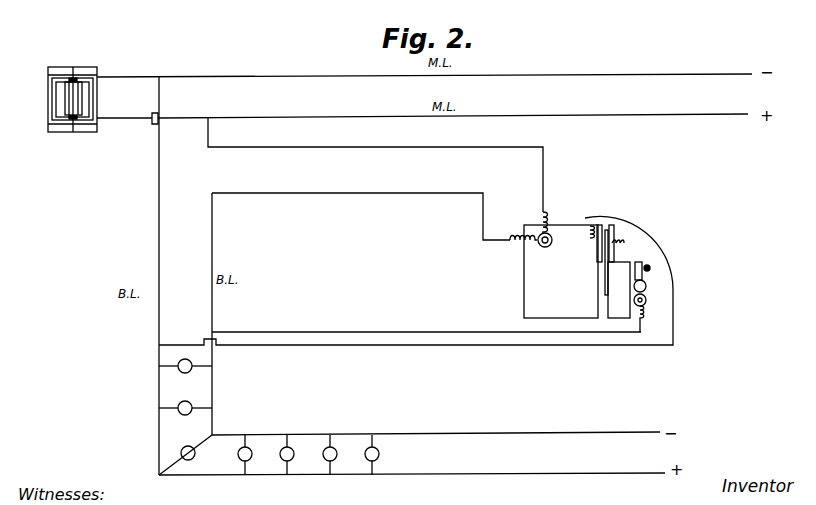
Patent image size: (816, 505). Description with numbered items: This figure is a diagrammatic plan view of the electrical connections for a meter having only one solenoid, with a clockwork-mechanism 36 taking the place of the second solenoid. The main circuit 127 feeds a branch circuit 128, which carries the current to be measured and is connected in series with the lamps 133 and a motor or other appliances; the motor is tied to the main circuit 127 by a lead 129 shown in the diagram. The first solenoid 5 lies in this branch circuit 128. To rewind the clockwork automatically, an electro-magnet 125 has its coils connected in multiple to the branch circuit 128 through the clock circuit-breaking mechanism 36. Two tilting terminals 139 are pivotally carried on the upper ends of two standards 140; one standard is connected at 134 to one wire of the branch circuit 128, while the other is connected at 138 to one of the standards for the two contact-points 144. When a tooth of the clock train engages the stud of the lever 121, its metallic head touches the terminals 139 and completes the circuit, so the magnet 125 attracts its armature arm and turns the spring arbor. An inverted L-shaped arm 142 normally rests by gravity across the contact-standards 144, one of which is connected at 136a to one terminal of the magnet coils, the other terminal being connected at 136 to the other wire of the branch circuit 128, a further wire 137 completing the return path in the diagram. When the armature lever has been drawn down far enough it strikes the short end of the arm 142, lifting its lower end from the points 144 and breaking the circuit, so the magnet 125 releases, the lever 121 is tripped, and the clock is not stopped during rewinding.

The first solenoid 5 is at (544, 248).
The clockwork-mechanism 36 is at (619, 290).
The lever 121 is at (647, 284).
The electro-magnet 125 is at (646, 290).
The main circuit 127 is at (375, 79).
The branch circuit 128 is at (423, 148).
The motor lead wire 129 is at (160, 80).
The lamps 133 is at (192, 395).
The connection of standard to branch circuit wire 134 is at (89, 75).
The connection of magnet terminal to branch circuit 136 is at (213, 331).
The connection of contact-standard to magnet coil terminal 136a is at (604, 283).
The wire 137 is at (470, 348).
The connection of standard to contact-point standard 138 is at (628, 249).
The tilting terminals 139 is at (598, 256).
The standards 140 is at (597, 236).
The inverted L-shaped arm 142 is at (647, 266).
The contact-standards 144 is at (686, 258).